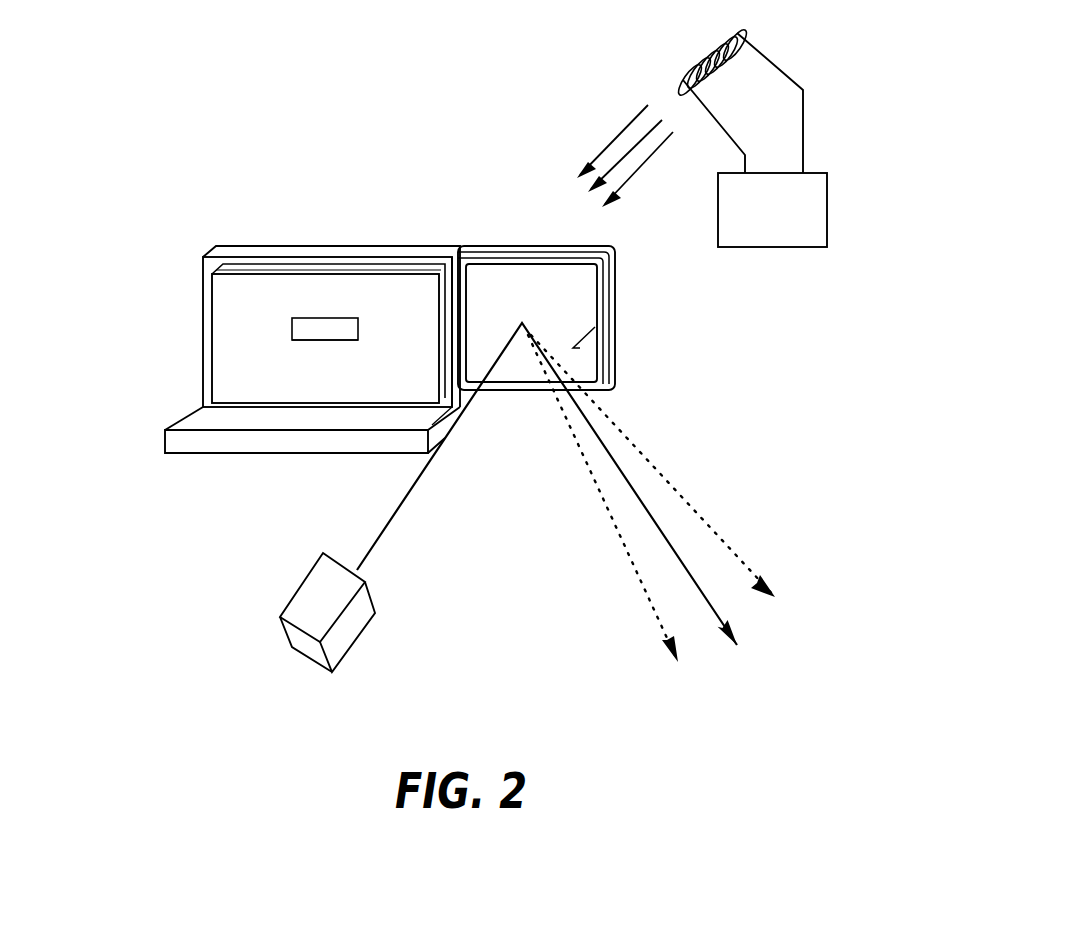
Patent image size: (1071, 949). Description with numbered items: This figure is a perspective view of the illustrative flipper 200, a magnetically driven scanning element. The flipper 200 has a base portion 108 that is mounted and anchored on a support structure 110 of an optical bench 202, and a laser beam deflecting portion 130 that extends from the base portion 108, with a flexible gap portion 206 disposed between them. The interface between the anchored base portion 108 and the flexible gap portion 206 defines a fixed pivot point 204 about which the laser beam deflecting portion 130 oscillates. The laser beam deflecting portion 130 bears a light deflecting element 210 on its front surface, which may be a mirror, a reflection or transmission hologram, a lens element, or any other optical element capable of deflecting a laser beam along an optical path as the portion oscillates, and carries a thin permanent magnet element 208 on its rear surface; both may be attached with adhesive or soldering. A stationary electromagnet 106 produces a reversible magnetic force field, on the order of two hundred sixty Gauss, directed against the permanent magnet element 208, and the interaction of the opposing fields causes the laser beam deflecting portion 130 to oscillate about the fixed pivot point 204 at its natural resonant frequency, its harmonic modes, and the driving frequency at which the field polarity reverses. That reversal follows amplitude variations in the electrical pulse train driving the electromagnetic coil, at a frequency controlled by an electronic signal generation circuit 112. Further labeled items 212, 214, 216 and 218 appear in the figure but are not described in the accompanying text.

The electromagnet 106 is at (698, 62).
The base portion 108 is at (250, 281).
The support structure 110 is at (250, 309).
The electronic signal generation circuit 112 is at (777, 247).
The laser beam deflecting portion 130 is at (580, 349).
The flipper 200 is at (692, 403).
The optical bench 202 is at (165, 435).
The fixed pivot point 204 is at (445, 267).
The flexible gap portion 206 is at (468, 250).
The permanent magnet element 208 is at (615, 247).
The light deflecting element 210 is at (592, 300).
The display region 212 is at (308, 343).
The displayed content 214 is at (323, 329).
The viewer 216 is at (363, 620).
The reflected light 218 is at (585, 417).